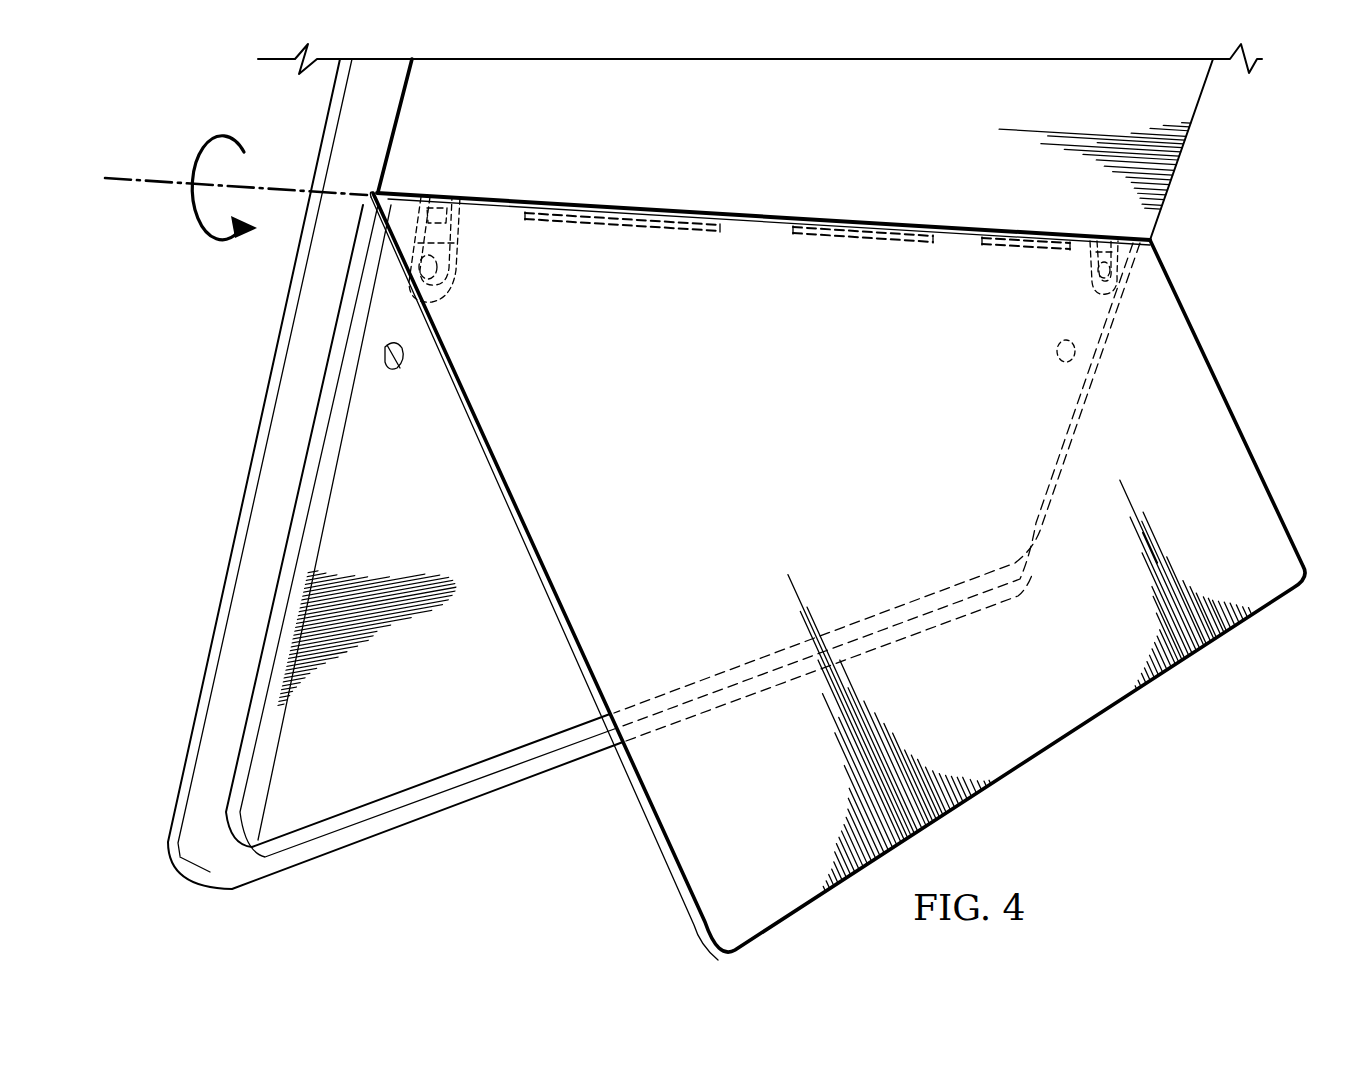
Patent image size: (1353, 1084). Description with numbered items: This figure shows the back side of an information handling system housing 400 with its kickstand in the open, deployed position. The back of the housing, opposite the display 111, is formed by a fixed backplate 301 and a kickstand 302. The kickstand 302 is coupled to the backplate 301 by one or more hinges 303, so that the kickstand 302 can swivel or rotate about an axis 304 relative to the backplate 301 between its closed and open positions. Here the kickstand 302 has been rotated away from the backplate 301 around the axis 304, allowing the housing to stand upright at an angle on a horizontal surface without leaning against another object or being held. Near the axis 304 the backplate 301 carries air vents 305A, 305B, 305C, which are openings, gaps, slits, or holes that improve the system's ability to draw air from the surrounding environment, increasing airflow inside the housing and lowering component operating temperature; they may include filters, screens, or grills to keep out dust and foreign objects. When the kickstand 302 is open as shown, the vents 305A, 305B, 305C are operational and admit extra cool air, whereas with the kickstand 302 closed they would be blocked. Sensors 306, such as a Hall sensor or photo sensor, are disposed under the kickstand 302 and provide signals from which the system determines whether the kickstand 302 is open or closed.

The display 111 is at (259, 425).
The fixed backplate 301 is at (840, 170).
The kickstand 302 is at (1064, 748).
The hinges 303 is at (455, 246).
The axis 304 is at (758, 224).
The air vent 305A is at (595, 225).
The air vent 305B is at (1025, 244).
The air vent 305C is at (863, 242).
The sensors 306 is at (396, 373).
The housing with kickstand in open position 400 is at (1279, 168).